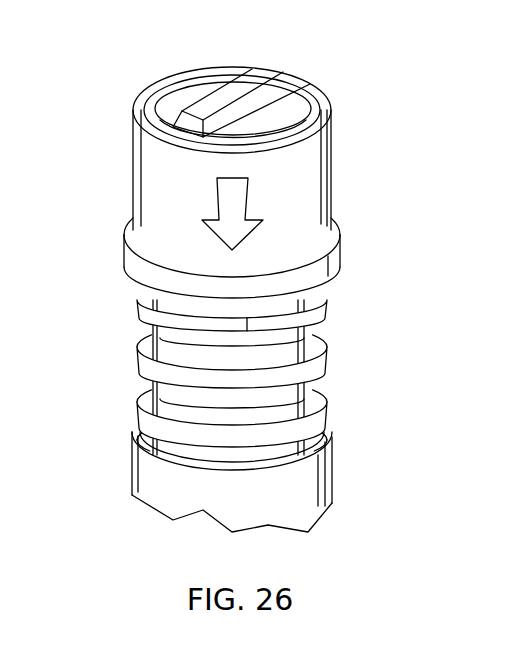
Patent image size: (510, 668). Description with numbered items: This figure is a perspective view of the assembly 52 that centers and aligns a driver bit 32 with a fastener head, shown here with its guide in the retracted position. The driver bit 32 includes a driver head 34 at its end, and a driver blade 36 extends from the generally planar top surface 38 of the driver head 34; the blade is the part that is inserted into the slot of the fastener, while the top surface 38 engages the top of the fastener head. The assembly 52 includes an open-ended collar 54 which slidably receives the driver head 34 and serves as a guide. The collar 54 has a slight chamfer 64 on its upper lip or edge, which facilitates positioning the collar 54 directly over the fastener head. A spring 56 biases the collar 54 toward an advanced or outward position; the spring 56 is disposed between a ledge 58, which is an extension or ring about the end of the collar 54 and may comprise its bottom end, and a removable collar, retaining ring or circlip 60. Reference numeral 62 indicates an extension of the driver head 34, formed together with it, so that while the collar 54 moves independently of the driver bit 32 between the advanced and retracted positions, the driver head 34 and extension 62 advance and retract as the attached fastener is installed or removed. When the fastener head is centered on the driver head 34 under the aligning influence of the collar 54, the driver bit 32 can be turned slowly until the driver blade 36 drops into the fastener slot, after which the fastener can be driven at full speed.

The driver bit 32 is at (298, 118).
The driver head 34 is at (157, 120).
The driver blade 36 is at (228, 97).
The top surface 38 is at (278, 113).
The assembly 52 is at (230, 274).
The collar 54 is at (323, 168).
The spring 56 is at (237, 377).
The ledge 58 is at (335, 268).
The retaining ring 60 is at (322, 485).
The extension 62 is at (175, 388).
The chamfer 64 is at (152, 100).